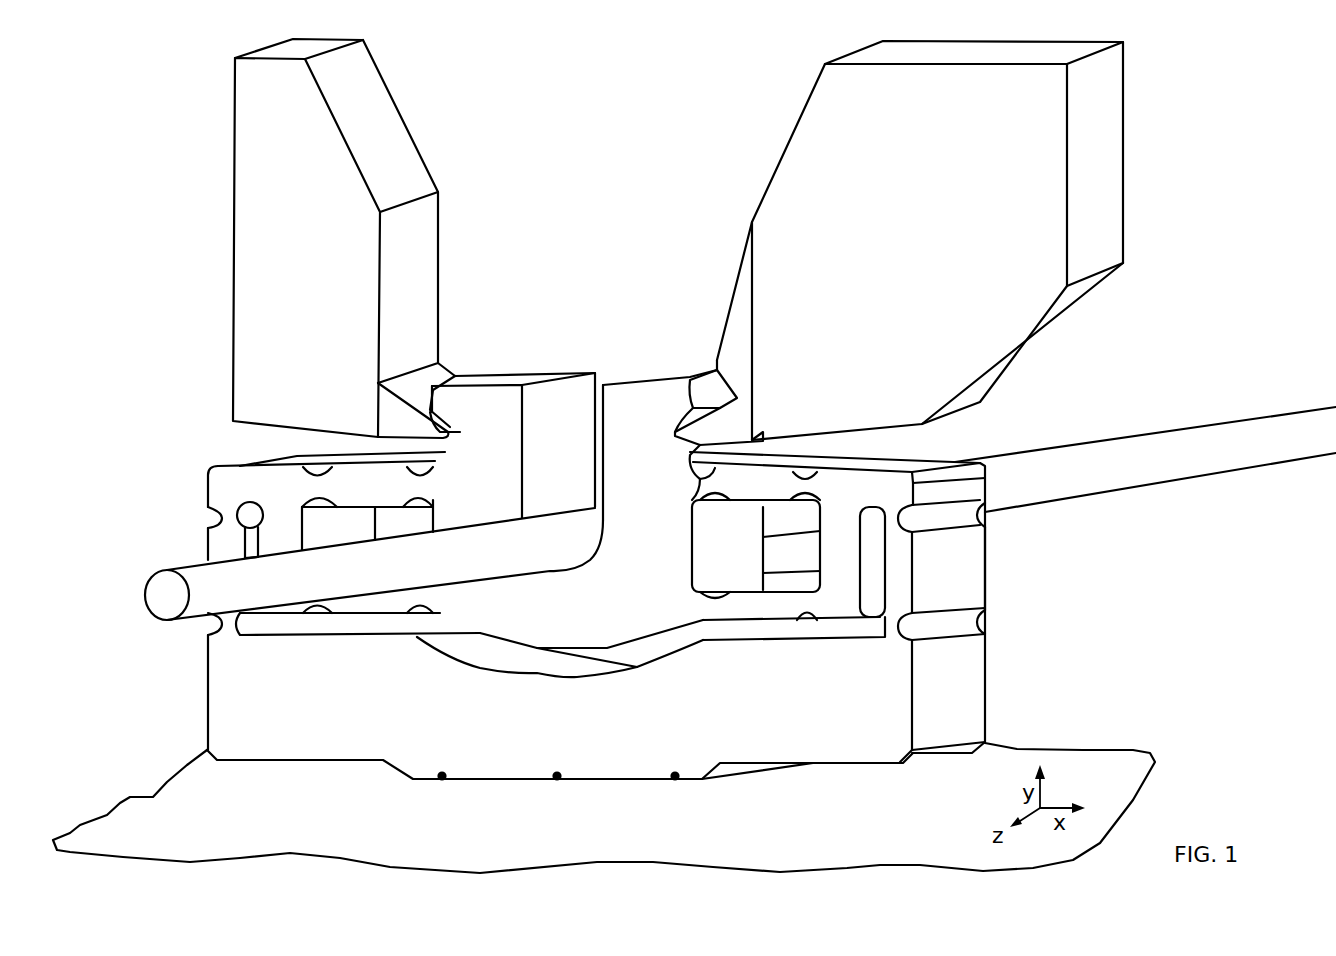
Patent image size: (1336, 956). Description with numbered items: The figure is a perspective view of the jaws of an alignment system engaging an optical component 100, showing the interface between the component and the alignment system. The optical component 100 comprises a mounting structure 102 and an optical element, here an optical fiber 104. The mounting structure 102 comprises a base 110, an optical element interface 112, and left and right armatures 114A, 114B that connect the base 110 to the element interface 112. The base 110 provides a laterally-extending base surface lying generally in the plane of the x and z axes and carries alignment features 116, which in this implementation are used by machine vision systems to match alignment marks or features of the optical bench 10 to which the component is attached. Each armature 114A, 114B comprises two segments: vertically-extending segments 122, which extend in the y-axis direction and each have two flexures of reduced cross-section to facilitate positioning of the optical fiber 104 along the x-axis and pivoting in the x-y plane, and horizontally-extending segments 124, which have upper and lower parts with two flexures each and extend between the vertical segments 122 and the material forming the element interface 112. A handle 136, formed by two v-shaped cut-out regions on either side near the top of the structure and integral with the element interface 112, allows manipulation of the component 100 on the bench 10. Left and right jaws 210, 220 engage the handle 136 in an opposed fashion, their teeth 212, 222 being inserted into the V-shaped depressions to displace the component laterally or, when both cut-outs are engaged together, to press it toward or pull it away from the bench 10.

The optical bench 10 is at (878, 850).
The optical component 100 is at (249, 806).
The mounting structure 102 is at (355, 763).
The optical fiber 104 is at (146, 582).
The base 110 is at (692, 779).
The optical element interface 112 is at (604, 368).
The left armature 114A is at (210, 485).
The right armature 114B is at (986, 650).
The alignment features 116 is at (440, 779).
The vertically-extending segments 122 is at (208, 552).
The horizontally-extending segments 124 is at (325, 511).
The handle 136 is at (440, 442).
The left jaw 210 is at (434, 180).
The tooth of left jaw 212 is at (383, 415).
The right jaw 220 is at (772, 178).
The tooth of right jaw 222 is at (705, 410).